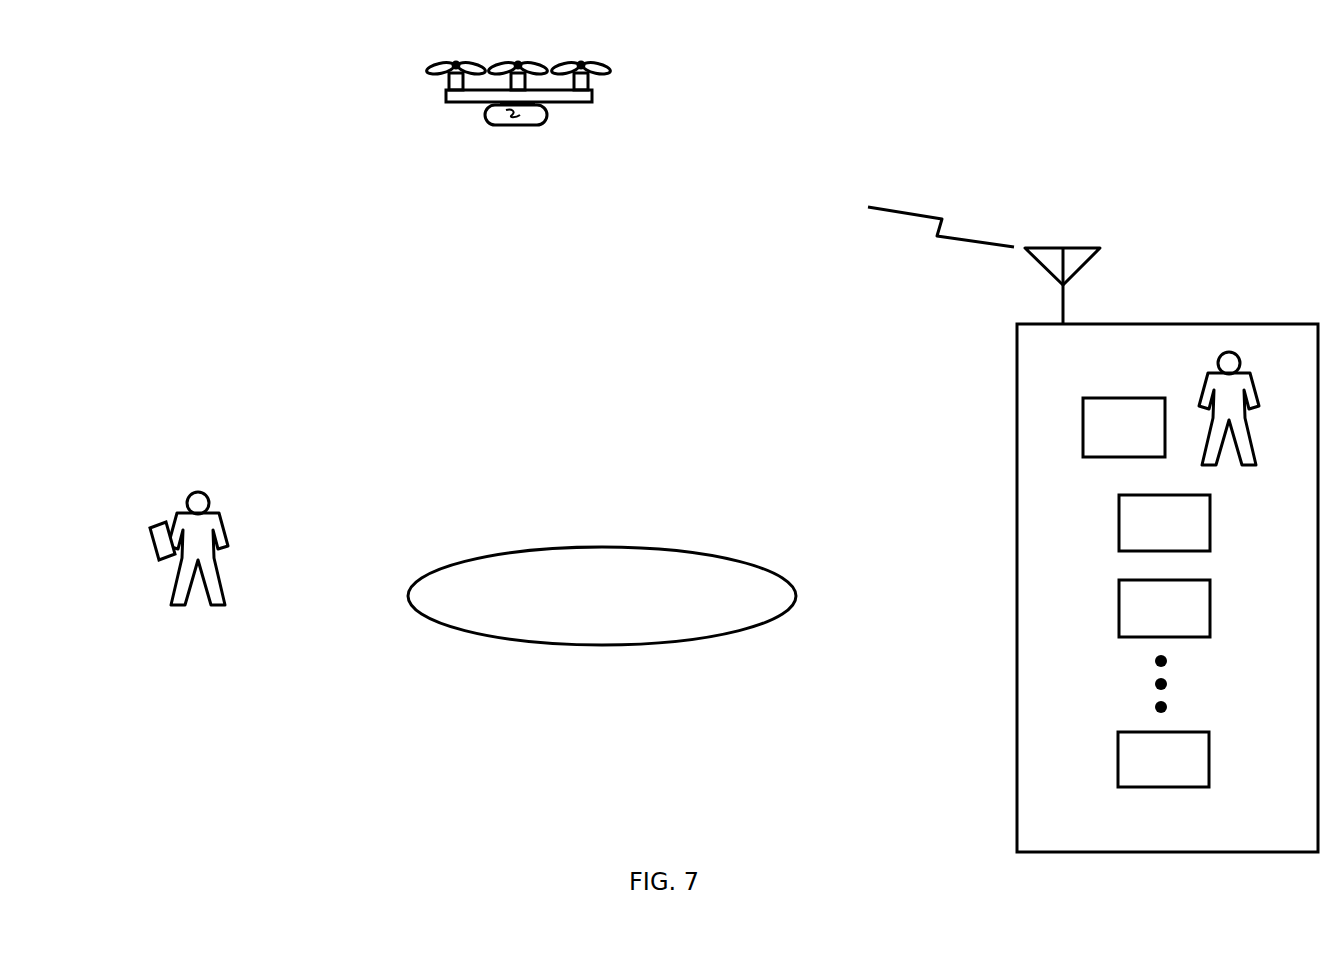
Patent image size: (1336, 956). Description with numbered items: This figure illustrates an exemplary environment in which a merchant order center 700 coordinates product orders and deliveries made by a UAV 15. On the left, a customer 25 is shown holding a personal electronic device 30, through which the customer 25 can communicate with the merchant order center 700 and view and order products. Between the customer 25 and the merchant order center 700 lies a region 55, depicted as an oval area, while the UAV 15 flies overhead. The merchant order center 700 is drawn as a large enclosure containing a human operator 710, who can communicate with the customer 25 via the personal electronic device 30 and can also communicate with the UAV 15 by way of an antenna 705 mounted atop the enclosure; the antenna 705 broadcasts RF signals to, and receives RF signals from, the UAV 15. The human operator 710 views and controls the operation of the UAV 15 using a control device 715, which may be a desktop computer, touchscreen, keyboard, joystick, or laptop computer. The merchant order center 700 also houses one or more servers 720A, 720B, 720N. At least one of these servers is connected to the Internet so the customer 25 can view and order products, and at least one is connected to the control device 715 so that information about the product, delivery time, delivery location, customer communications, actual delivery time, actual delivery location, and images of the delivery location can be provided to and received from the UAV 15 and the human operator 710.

The UAV 15 is at (437, 95).
The customer 25 is at (226, 518).
The personal electronic device 30 is at (163, 522).
The geographic area 55 is at (576, 604).
The merchant order center 700 is at (1186, 831).
The antenna 705 is at (1107, 244).
The human operator 710 is at (1195, 383).
The control device 715 is at (1146, 439).
The server 720A is at (1135, 536).
The server 720B is at (1135, 621).
The server 720N is at (1135, 772).